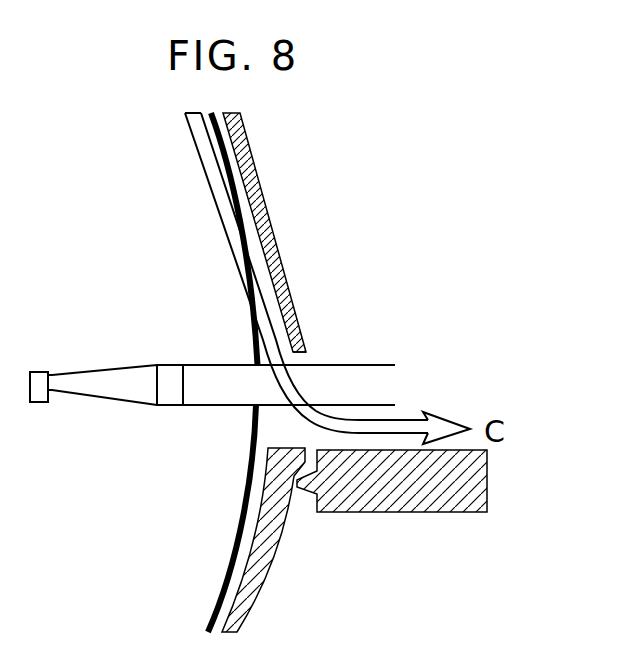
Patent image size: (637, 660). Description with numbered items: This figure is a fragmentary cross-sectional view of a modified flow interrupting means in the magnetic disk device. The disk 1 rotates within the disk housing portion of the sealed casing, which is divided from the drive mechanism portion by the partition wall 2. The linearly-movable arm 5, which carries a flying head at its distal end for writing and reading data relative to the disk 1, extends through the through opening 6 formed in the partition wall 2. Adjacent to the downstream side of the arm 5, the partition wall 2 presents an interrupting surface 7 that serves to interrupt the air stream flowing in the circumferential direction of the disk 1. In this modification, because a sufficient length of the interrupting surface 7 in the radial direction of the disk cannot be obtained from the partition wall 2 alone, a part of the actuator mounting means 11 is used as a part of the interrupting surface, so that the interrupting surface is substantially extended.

The disk 1 is at (188, 165).
The partition wall 2 is at (262, 205).
The arm 5 is at (215, 375).
The through opening 6 is at (310, 353).
The interrupting surface 7 is at (287, 448).
The actuator mounting means 11 is at (415, 497).